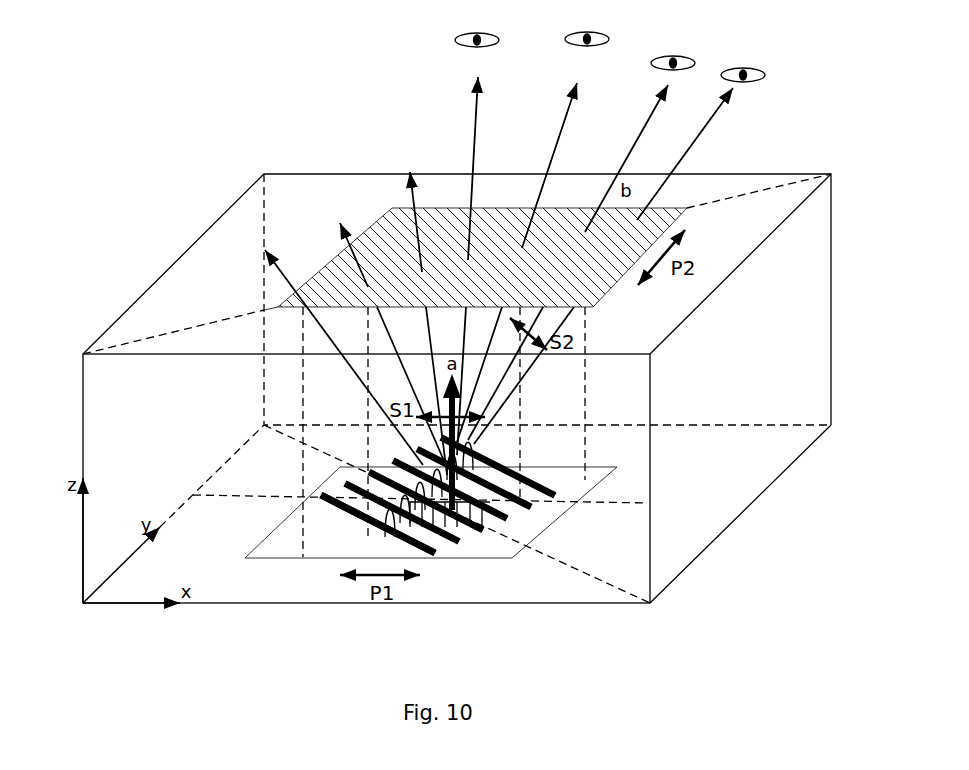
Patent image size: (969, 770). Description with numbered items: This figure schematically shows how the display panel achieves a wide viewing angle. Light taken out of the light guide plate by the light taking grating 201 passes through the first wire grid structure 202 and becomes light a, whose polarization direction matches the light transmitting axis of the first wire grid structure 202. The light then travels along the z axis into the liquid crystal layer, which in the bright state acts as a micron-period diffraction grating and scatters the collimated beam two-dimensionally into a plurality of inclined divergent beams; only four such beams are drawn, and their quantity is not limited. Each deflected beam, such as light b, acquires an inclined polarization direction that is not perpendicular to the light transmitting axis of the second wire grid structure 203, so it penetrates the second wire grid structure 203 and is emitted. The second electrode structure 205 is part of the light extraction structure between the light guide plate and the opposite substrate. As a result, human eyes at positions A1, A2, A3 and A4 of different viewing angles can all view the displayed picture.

The light taking grating 201 is at (460, 527).
The first wire grid structure 202 is at (537, 520).
The second wire grid structure 203 is at (378, 232).
The second electrode structure 205 is at (457, 538).
The viewing position A1 is at (477, 25).
The viewing position A2 is at (587, 24).
The viewing position A3 is at (673, 48).
The viewing position A4 is at (743, 60).